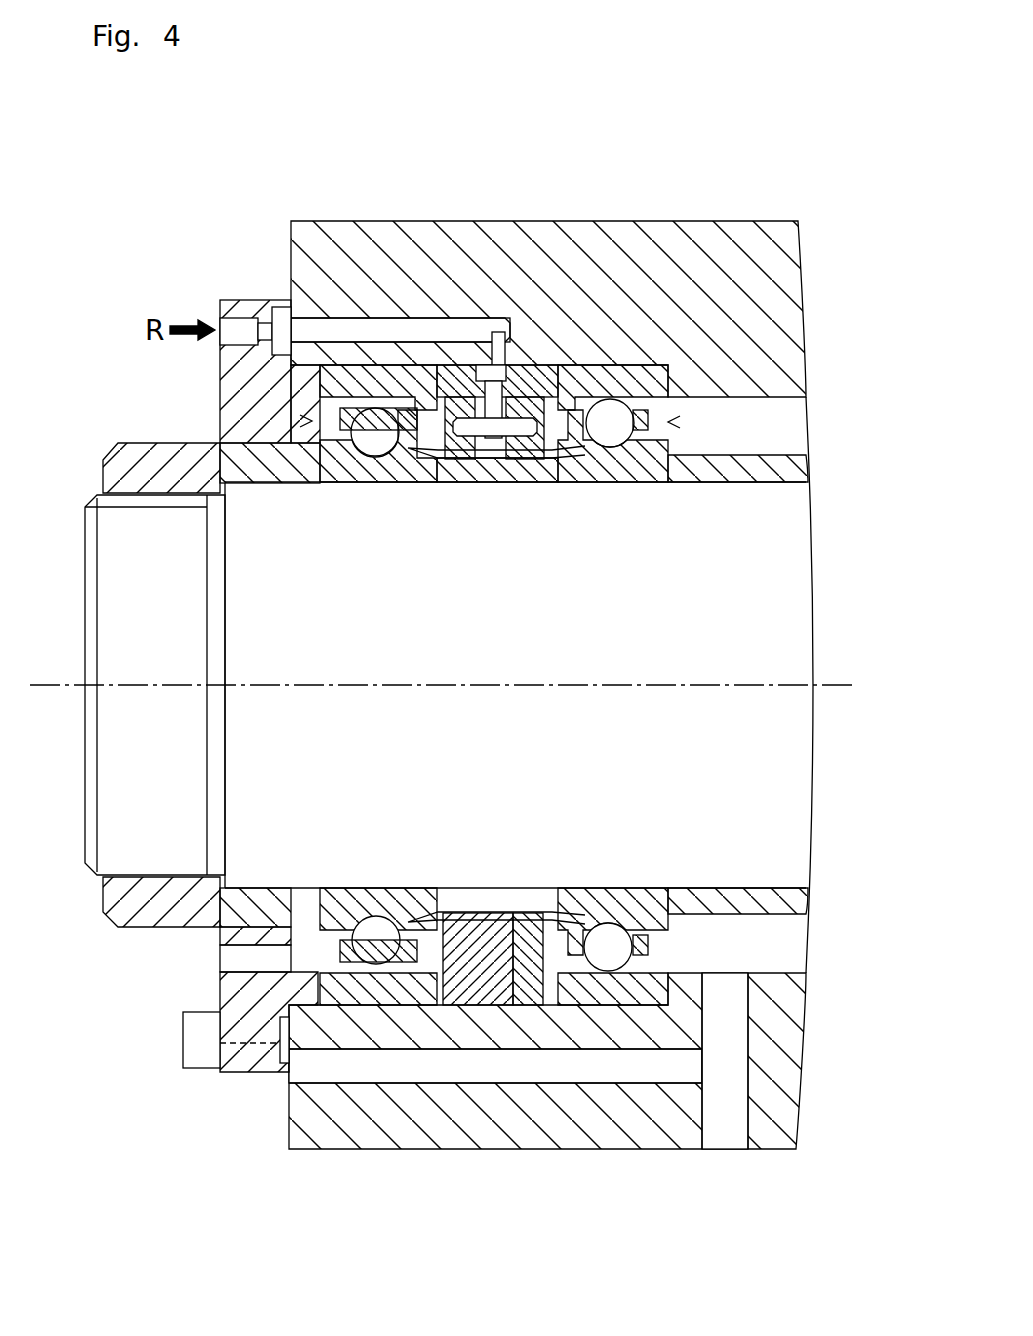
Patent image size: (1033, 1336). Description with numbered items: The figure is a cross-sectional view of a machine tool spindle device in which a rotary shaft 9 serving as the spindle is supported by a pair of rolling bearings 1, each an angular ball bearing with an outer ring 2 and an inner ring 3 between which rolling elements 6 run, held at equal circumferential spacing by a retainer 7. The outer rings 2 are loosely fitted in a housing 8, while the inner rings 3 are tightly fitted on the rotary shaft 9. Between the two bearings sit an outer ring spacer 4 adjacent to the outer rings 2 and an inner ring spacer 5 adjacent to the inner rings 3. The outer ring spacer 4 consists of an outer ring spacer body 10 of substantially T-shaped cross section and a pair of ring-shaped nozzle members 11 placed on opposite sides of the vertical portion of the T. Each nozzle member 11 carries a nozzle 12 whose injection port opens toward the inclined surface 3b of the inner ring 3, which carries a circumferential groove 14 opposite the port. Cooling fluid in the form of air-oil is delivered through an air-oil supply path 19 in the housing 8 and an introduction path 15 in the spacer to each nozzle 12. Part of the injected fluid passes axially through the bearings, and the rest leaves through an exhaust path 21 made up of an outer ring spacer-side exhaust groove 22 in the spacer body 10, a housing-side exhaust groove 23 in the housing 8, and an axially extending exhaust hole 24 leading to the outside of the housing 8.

The rolling bearing 1 is at (312, 421).
The outer ring 2 is at (362, 375).
The inner ring 3 is at (340, 468).
The inclined surface 3b is at (392, 455).
The outer ring spacer 4 is at (619, 152).
The inner ring spacer 5 is at (510, 462).
The rolling elements 6 is at (372, 408).
The retainer 7 is at (352, 932).
The housing 8 is at (310, 293).
The rotary shaft 9 is at (715, 762).
The outer ring spacer body 10 is at (540, 380).
The nozzle member 11 is at (458, 410).
The nozzle 12 is at (455, 465).
The circumferential groove 14 is at (400, 900).
The introduction path 15 is at (497, 345).
The air-oil supply path 19 is at (328, 322).
The exhaust path 21 is at (705, 1209).
The outer ring spacer-side exhaust groove 22 is at (570, 1040).
The housing-side exhaust groove 23 is at (450, 1040).
The exhaust hole 24 is at (670, 1070).